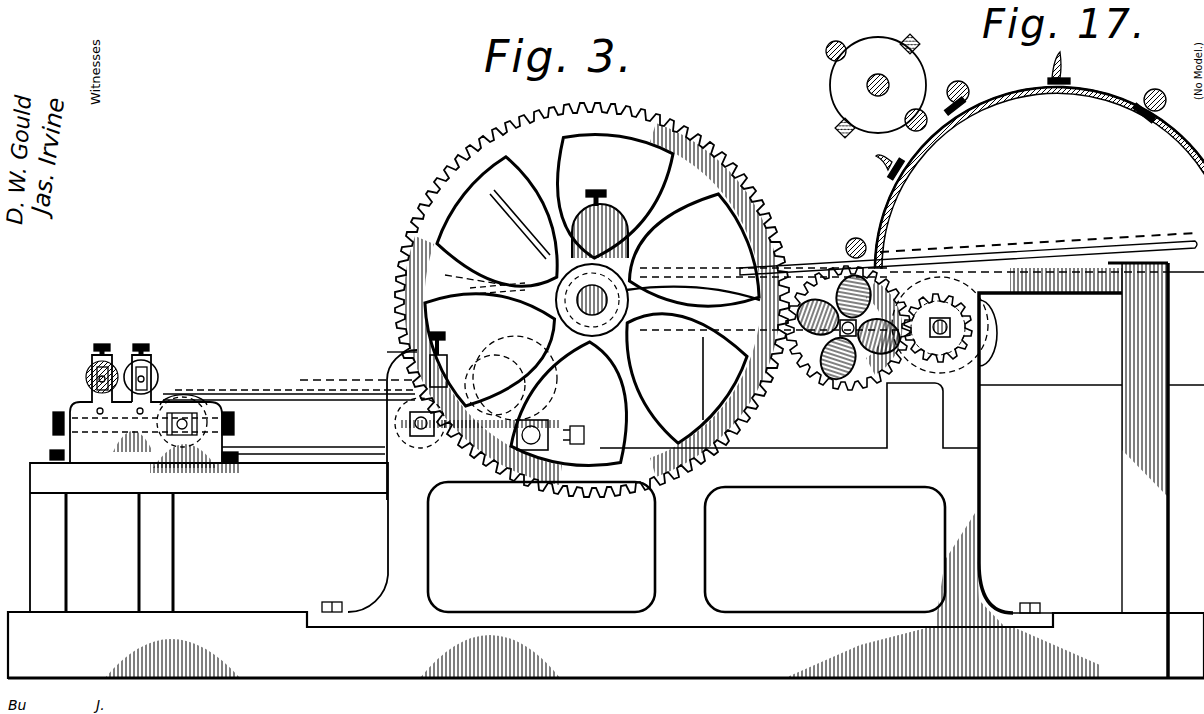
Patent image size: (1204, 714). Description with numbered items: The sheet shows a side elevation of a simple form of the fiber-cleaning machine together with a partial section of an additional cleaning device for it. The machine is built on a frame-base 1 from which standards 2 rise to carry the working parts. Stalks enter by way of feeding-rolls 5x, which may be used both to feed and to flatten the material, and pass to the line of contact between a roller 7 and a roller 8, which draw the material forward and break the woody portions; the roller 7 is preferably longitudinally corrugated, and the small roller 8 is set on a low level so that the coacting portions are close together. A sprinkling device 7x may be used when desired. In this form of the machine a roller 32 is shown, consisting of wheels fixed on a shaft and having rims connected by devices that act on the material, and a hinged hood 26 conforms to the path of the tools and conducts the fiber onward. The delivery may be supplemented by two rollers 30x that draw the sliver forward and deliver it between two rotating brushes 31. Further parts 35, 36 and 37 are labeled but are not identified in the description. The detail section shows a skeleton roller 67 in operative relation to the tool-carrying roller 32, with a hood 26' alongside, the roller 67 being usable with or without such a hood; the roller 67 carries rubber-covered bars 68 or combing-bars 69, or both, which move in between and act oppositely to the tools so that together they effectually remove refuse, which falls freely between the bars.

In FIG. 3, the frame-base 1 is at (606, 645).
In FIG. 3, the standards 2 is at (795, 470).
In FIG. 3, the feeding-rolls 5x is at (650, 258).
In FIG. 3, the roller 7 is at (604, 222).
In FIG. 3, the sprinkling device 7x is at (548, 262).
In FIG. 3, the roller 8 is at (485, 278).
In FIG. 3, the hood 26 is at (477, 360).
In FIG. 17, the ring 26' is at (878, 97).
In FIG. 3, the rollers 30x is at (157, 371).
In FIG. 3, the rotating brushes 31 is at (87, 375).
In FIG. 3, the roller 32 is at (498, 506).
In FIG. 17, the roller 32 is at (1025, 160).
In FIG. 3, the lever 35 is at (413, 378).
In FIG. 3, the bearing 36 is at (400, 424).
In FIG. 3, the rods 37 is at (270, 400).
In FIG. 17, the skeleton roller 67 is at (892, 91).
In FIG. 17, the rubber-covered bars 68 is at (918, 35).
In FIG. 17, the combing-bars 69 is at (849, 40).